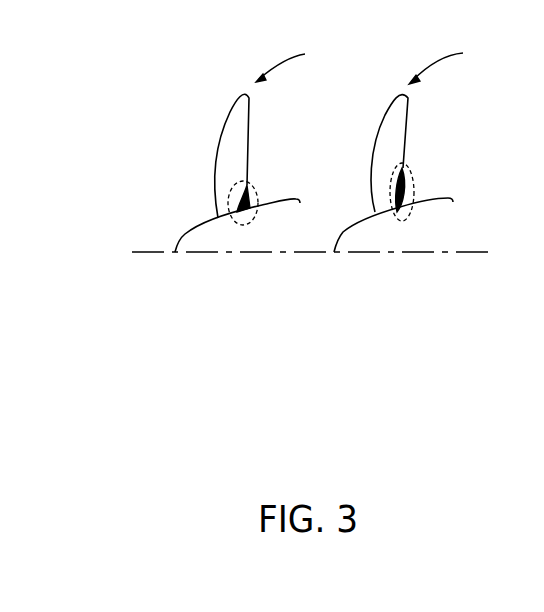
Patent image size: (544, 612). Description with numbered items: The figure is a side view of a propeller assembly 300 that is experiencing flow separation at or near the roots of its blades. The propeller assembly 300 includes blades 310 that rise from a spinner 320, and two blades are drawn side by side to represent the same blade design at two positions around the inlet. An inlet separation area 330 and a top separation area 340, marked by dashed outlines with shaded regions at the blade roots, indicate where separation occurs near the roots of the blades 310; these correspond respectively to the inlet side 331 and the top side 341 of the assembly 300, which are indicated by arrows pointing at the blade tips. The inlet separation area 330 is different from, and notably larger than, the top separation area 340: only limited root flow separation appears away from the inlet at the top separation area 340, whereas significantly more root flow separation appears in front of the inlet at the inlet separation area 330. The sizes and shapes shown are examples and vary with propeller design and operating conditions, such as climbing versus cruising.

The propeller assembly 300 is at (192, 56).
The blades 310 is at (238, 103).
The spinner 320 is at (185, 234).
The inlet separation area 330 is at (413, 198).
The top separation area 340 is at (256, 195).
The inlet side 331 is at (458, 61).
The top side 341 is at (304, 60).